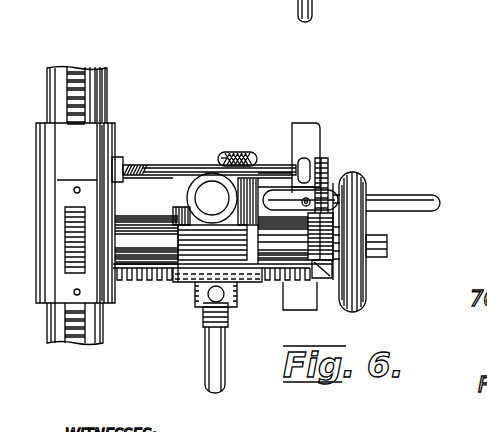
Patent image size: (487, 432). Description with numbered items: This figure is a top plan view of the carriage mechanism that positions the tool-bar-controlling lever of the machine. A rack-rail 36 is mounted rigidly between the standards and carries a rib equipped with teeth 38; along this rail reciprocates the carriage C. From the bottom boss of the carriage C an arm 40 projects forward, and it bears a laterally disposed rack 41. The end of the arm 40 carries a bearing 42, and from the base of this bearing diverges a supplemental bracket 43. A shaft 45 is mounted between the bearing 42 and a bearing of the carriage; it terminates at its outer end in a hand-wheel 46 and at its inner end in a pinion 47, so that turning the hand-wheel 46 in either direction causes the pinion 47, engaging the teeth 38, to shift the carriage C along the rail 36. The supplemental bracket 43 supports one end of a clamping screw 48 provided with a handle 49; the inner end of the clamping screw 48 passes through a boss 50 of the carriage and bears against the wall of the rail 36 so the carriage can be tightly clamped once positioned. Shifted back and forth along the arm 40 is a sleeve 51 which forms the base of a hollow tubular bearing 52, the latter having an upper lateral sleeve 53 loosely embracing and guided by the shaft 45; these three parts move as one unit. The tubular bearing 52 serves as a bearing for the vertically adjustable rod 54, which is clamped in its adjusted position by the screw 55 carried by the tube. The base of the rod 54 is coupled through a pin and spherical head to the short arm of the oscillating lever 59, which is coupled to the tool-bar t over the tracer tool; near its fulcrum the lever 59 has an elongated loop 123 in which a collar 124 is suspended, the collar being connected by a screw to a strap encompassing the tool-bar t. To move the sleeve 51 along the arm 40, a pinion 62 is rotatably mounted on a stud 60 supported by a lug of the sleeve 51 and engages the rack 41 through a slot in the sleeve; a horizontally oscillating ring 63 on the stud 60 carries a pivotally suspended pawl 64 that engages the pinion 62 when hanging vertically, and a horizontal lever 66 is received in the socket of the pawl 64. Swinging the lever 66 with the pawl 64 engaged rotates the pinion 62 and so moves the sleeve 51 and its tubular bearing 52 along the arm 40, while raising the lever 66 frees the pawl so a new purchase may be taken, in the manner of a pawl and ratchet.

The rack-rail 36 is at (102, 72).
The teeth 38 is at (73, 88).
The carriage C is at (115, 127).
The pinion 47 is at (82, 222).
The hollow tubular bearing 52 is at (212, 194).
The boss 50 is at (124, 158).
The rod 54 is at (240, 153).
The screw 55 is at (238, 152).
The sleeve 51 is at (175, 207).
The clamping screw 48 is at (176, 164).
The upper lateral sleeve 53 is at (193, 248).
The tool-bar t is at (310, 122).
The handle 49 is at (320, 158).
The elongated loop 123 is at (275, 192).
The collar 124 is at (325, 187).
The bearing 42 is at (327, 268).
The hand-wheel 46 is at (363, 220).
The supplemental bracket 43 is at (338, 193).
The shaft 45 is at (385, 257).
The lever 59 is at (423, 194).
The arm 40 is at (136, 273).
The rack 41 is at (286, 284).
The pinion 62 is at (232, 298).
The stud 60 is at (220, 300).
The pawl 64 is at (205, 327).
The ring 63 is at (207, 305).
The lever 66 is at (222, 370).